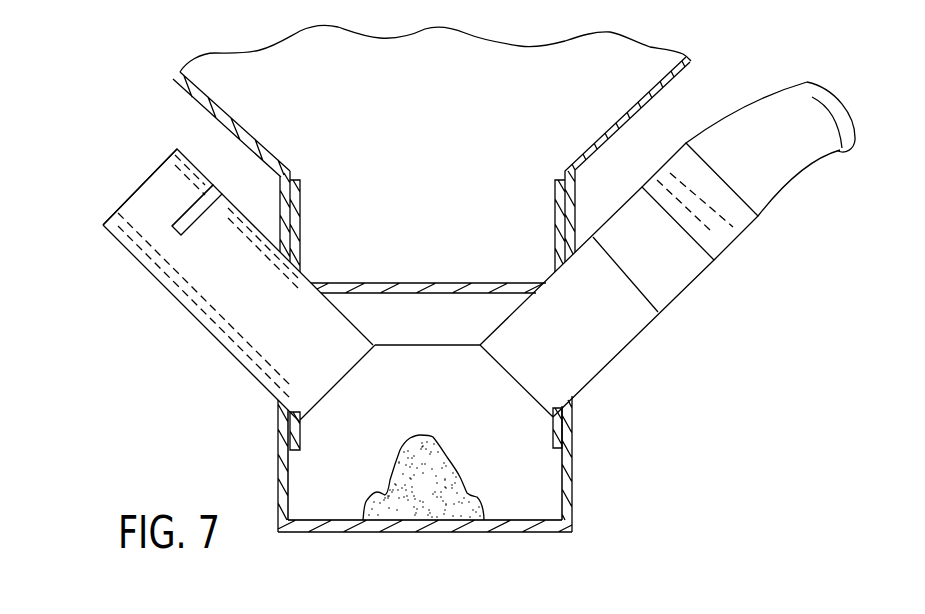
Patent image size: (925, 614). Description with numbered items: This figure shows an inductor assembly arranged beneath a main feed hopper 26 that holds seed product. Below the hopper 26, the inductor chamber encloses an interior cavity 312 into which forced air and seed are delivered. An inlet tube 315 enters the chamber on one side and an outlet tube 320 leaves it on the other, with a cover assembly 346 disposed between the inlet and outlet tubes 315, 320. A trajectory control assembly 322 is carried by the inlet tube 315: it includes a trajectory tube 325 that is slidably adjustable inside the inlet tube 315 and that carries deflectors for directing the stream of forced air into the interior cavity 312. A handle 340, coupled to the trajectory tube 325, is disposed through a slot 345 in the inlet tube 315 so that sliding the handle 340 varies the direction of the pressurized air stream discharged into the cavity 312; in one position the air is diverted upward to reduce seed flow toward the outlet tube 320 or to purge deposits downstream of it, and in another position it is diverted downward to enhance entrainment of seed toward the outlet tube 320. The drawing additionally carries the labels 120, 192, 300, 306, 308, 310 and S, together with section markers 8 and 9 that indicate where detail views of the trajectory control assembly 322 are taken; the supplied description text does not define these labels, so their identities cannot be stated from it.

The main feed hopper 26 is at (662, 88).
The hose 120 is at (753, 102).
The coupling 192 is at (742, 220).
The funnel body 300 is at (700, 373).
The container left wall 306 is at (278, 484).
The container right wall 308 is at (573, 502).
The container bottom 310 is at (425, 533).
The interior cavity 312 is at (513, 487).
The inlet tube 315 is at (100, 234).
The outlet tube 320 is at (645, 338).
The trajectory control assembly 322 is at (197, 310).
The trajectory tube 325 is at (232, 360).
The handle 340 is at (178, 233).
The slot 345 is at (203, 218).
The cover assembly 346 is at (424, 345).
The sample material S is at (430, 498).
The section line 8- 8 is at (275, 187).
The section line 9- 9 is at (262, 397).